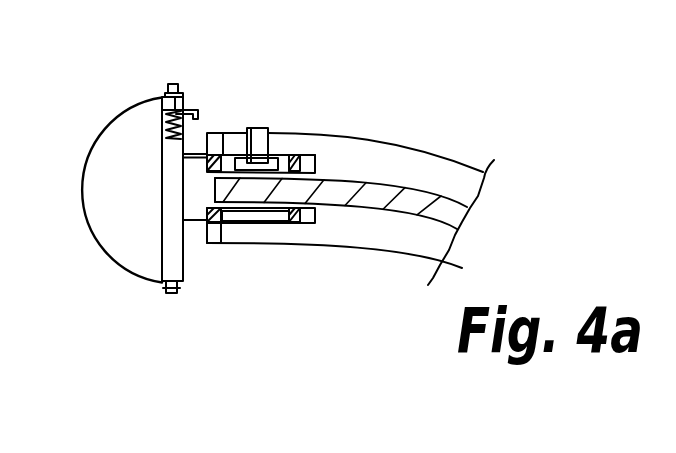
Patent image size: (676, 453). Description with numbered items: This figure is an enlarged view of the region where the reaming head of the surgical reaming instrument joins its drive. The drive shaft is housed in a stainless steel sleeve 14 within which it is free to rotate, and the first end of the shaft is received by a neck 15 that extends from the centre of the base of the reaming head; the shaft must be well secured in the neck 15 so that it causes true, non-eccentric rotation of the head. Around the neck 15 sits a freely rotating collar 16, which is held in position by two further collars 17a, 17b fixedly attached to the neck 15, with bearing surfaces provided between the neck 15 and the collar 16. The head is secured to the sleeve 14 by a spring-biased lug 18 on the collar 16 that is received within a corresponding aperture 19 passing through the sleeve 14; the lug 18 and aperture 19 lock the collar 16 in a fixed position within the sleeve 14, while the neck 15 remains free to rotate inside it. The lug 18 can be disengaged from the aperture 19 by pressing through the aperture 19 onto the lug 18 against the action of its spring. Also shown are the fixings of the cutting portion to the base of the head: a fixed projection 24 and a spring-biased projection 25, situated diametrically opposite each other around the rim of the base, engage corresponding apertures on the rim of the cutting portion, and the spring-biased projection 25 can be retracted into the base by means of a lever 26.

The sleeve 14 is at (410, 230).
The neck 15 is at (192, 216).
The collar 16 is at (260, 215).
The further collar 17a is at (211, 212).
The further collar 17b is at (294, 222).
The spring-biased lug 18 is at (257, 133).
The aperture 19 is at (268, 138).
The fixed projection 24 is at (167, 286).
The spring-biased projection 25 is at (172, 84).
The lever 26 is at (194, 110).